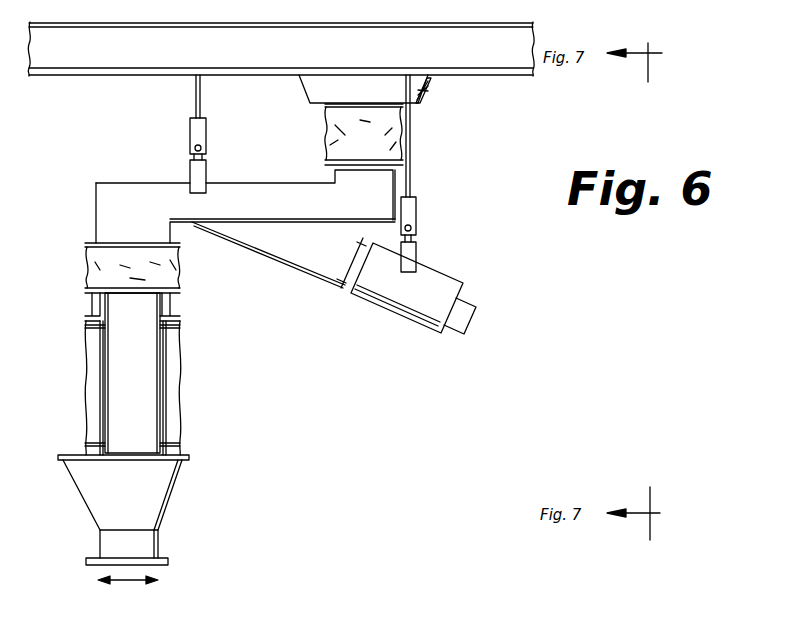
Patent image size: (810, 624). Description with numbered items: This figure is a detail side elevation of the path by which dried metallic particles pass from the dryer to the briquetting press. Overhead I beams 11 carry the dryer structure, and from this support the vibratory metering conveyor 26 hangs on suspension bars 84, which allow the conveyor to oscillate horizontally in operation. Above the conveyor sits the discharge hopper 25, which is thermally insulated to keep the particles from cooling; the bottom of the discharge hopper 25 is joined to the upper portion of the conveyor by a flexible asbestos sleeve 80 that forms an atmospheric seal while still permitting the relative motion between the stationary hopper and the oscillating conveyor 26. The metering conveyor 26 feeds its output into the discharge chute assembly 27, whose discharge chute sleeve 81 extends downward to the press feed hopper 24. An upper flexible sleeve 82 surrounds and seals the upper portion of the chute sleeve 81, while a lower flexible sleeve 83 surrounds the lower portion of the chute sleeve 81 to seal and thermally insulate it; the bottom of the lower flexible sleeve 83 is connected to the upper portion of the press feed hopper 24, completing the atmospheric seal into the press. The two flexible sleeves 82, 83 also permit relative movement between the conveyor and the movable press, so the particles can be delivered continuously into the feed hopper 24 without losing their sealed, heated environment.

The I beams 11 is at (490, 50).
The press feed hopper 24 is at (147, 493).
The discharge hopper 25 is at (422, 88).
The vibratory metering conveyor 26 is at (290, 240).
The discharge chute assembly 27 is at (142, 398).
The asbestos sleeve 80 is at (390, 123).
The discharge chute sleeve 81 is at (162, 432).
The upper flexible sleeve 82 is at (86, 266).
The lower flexible sleeve 83 is at (178, 362).
The suspension bars 84 is at (196, 92).